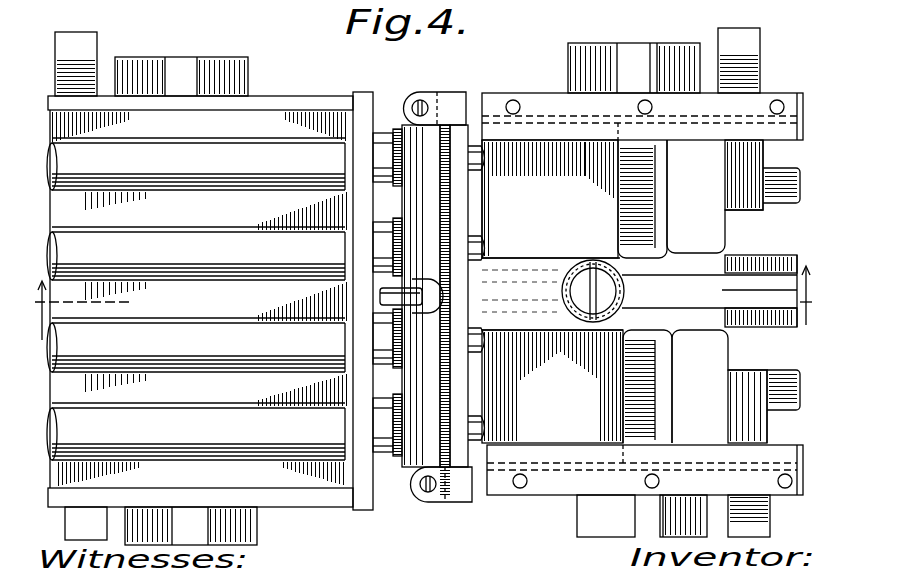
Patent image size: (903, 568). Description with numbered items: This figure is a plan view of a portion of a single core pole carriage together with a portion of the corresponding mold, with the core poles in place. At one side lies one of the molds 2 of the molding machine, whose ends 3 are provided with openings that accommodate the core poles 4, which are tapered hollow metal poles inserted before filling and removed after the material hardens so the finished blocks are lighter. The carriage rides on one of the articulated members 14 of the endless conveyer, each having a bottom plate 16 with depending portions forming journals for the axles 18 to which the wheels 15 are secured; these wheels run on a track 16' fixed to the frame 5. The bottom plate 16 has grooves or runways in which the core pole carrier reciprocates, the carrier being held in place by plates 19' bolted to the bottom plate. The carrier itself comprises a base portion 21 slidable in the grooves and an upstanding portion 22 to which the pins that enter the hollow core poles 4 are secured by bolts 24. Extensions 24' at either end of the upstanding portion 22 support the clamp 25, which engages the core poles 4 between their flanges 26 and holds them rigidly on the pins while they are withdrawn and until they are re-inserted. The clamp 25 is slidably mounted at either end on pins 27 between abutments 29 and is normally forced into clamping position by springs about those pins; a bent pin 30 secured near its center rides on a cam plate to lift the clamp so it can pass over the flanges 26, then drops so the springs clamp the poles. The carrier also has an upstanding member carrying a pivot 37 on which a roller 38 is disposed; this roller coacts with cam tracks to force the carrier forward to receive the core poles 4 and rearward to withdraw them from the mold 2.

The molds 2 is at (270, 96).
The ends 3 is at (346, 238).
The core poles 4 is at (196, 299).
The frame 5 is at (424, 303).
The articulated members 14 is at (552, 90).
The wheels 15 is at (632, 182).
The bottom plate 16 is at (639, 291).
The track 16' is at (669, 278).
The axles 18 is at (786, 203).
The plates 19' is at (642, 280).
The base portion 21 is at (556, 178).
The upstanding portion 22 is at (466, 318).
The bolts 24 is at (505, 293).
The extensions 24' is at (477, 296).
The clamp 25 is at (421, 296).
The flanges 26 is at (446, 362).
The pins 27 is at (421, 100).
The abutments 29 is at (408, 98).
The bent pin 30 is at (386, 298).
The pivot 37 is at (576, 290).
The roller 38 is at (580, 265).